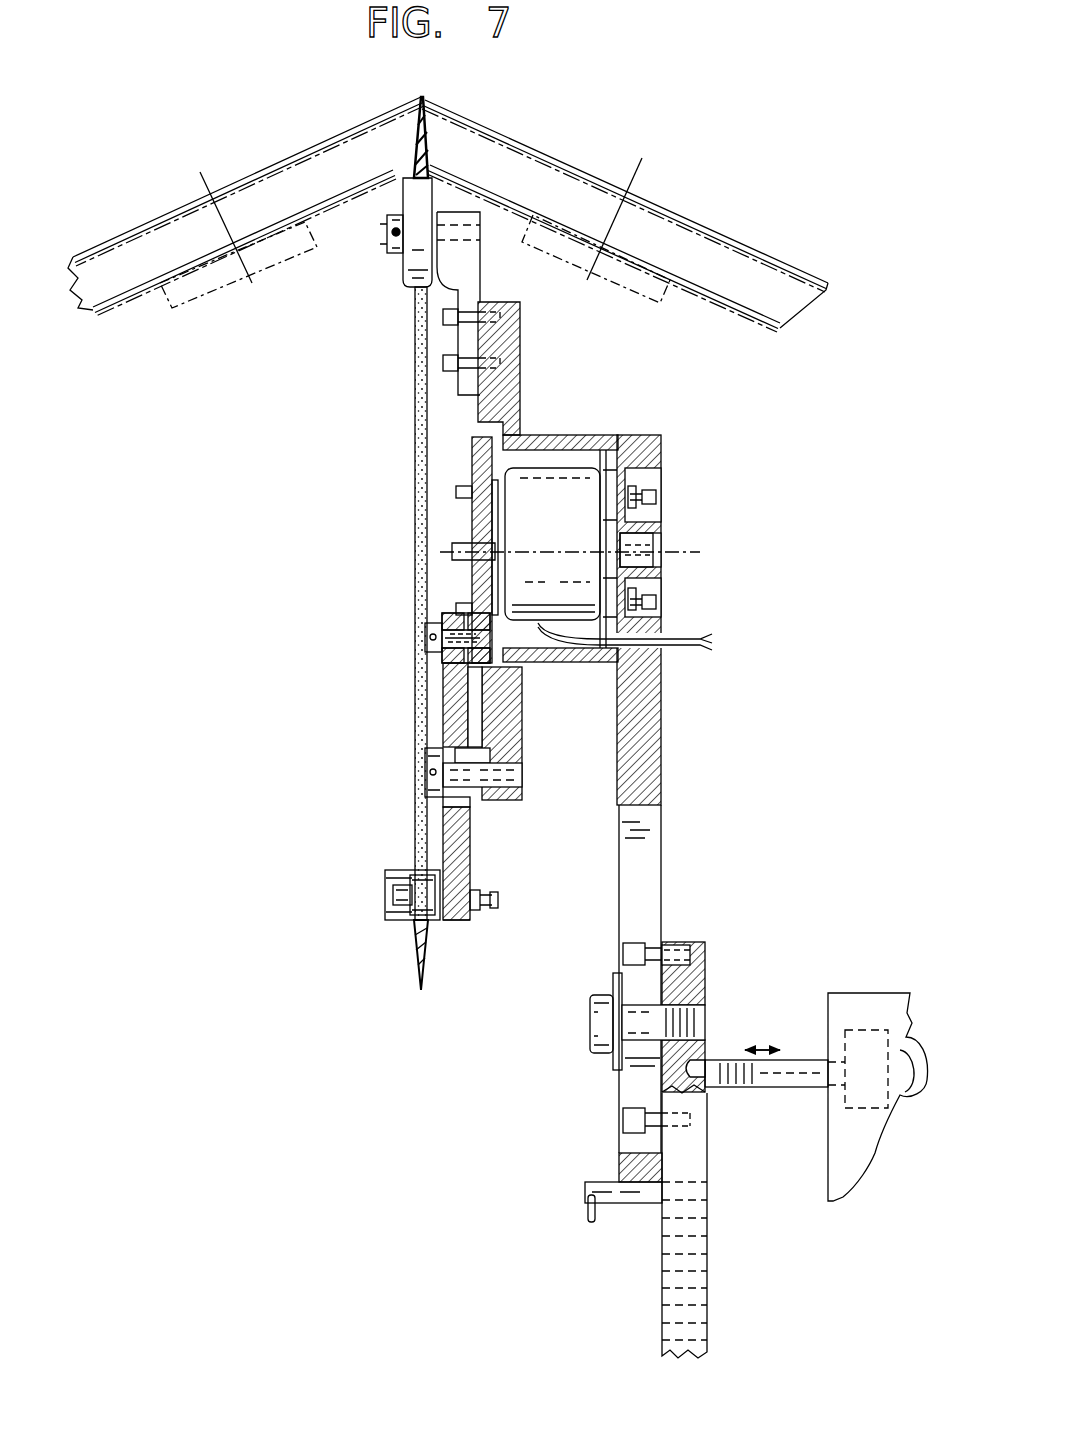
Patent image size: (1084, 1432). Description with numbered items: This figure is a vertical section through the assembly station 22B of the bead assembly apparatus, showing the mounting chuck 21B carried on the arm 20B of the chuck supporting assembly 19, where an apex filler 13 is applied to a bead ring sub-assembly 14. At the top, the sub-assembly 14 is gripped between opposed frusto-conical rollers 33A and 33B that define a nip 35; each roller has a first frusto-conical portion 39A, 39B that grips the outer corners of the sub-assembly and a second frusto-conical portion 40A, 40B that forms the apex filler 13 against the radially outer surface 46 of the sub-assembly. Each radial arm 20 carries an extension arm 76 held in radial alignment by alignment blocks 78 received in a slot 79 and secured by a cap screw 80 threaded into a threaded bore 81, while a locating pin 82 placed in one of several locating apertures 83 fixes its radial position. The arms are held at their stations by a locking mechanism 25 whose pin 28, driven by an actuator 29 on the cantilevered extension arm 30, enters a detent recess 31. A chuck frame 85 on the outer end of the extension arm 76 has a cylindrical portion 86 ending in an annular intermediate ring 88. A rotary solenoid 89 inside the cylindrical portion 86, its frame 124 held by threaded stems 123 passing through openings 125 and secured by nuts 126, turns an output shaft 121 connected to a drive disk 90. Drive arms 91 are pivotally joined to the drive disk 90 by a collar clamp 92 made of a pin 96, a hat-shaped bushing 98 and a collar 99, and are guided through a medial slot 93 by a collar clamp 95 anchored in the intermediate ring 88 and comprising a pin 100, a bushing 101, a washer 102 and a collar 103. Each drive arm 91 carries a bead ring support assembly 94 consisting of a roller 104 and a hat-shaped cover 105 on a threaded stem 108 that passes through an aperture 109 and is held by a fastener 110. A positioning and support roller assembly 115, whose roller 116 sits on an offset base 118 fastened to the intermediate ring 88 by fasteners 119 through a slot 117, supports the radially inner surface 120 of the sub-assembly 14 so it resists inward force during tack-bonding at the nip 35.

The apex filler 13 is at (436, 124).
The bead ring sub-assembly 14 is at (408, 178).
The chuck supporting assembly 19 is at (627, 1316).
The radially extending arm 20 is at (690, 945).
The arm 20B is at (700, 1265).
The mounting chuck 21B is at (512, 830).
The assembly station 22B is at (318, 555).
The locking mechanism 25 is at (815, 992).
The pin 28 is at (795, 1060).
The actuator 29 is at (910, 1100).
The cantilevered extension arm 30 is at (890, 998).
The detent recess 31 is at (720, 1087).
The roller 33A is at (118, 312).
The roller 33B is at (743, 305).
The nip 35 is at (440, 140).
The first frusto-conical portion 39A is at (146, 292).
The first frusto-conical portion 39B is at (690, 320).
The second frusto-conical portion 40A is at (128, 260).
The second frusto-conical portion 40B is at (733, 262).
The radially outer surface 46 is at (436, 150).
The extension arm 76 is at (652, 718).
The alignment blocks 78 is at (648, 943).
The slot 79 is at (652, 828).
The cap screw 80 is at (590, 1018).
The threaded bore 81 is at (705, 1010).
The locating pin 82 is at (610, 1185).
The locating apertures 83 is at (705, 1234).
The chuck frame 85 is at (586, 432).
The cylindrical portion 86 is at (562, 660).
The annular intermediate ring 88 is at (522, 738).
The rotary solenoid 89 is at (606, 478).
The drive disk 90 is at (472, 462).
The drive arms 91 is at (441, 711).
The collar clamp 92 is at (424, 652).
The slot 93 is at (468, 813).
The bead ring support assembly 94 is at (367, 920).
The collar clamp 95 is at (416, 766).
The pin 96 is at (455, 612).
The hat-shaped bushing 98 is at (448, 672).
The collar 99 is at (430, 628).
The pin 100 is at (522, 778).
The bushing 101 is at (455, 750).
The washer 102 is at (450, 803).
The collar 103 is at (428, 800).
The roller 104 is at (410, 892).
The hat-shaped cover 105 is at (405, 872).
The threaded stem 108 is at (462, 922).
The aperture 109 is at (490, 896).
The fastener 110 is at (482, 910).
The positioning and support roller assembly 115 is at (398, 282).
The roller 116 is at (440, 318).
The slot 117 is at (475, 415).
The offset base 118 is at (470, 291).
The fasteners 119 is at (444, 362).
The radially inner surface 120 is at (388, 232).
The output shaft 121 is at (462, 540).
The threaded stems 123 is at (656, 497).
The frame 124 is at (582, 478).
The openings 125 is at (654, 576).
The nut 126 is at (650, 506).